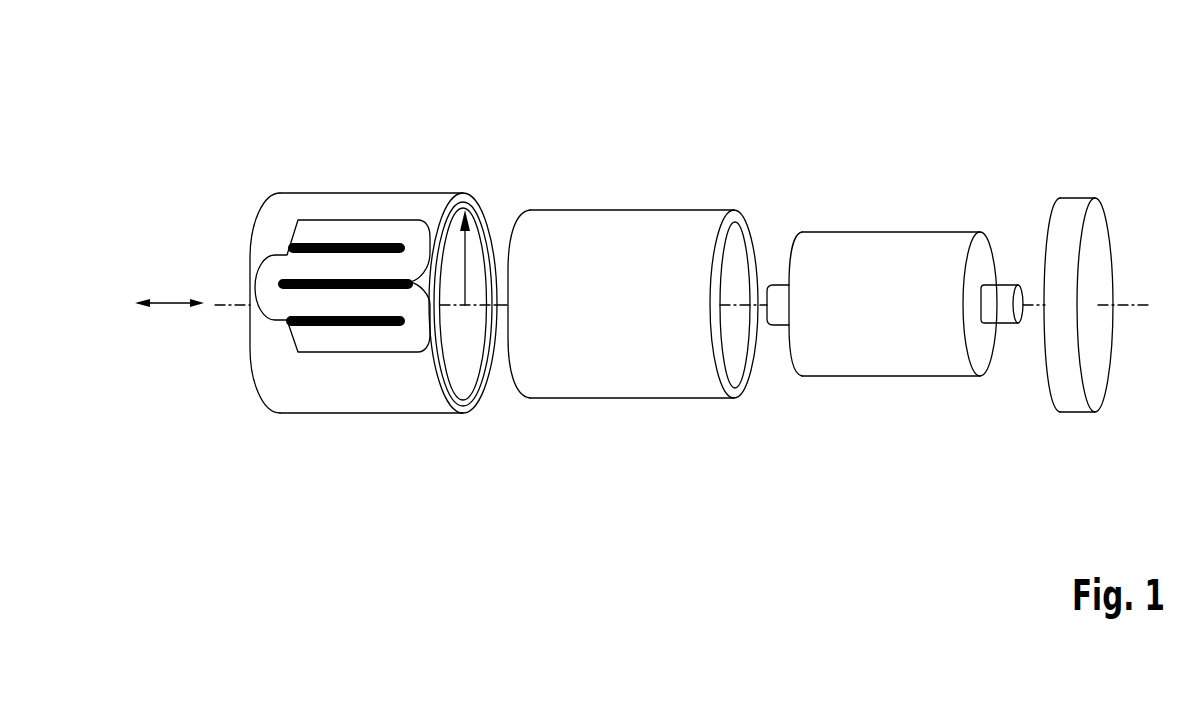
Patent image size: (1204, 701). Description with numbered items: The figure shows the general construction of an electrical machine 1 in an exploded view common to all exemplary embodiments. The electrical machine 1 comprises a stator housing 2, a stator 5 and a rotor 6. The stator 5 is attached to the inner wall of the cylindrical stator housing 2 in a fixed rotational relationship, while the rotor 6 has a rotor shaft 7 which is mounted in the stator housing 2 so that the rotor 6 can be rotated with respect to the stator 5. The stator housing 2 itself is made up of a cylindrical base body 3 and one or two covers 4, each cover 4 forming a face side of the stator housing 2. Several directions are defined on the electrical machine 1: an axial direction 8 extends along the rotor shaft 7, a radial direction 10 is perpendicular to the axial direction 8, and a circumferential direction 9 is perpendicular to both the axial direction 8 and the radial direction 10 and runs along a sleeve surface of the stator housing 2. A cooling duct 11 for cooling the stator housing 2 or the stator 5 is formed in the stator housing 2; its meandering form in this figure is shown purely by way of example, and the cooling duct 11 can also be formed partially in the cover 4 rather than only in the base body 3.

The electrical machine 1 is at (264, 129).
The stator housing 2 is at (357, 424).
The cylindrical base body 3 is at (410, 392).
The cover 4 is at (1072, 400).
The stator 5 is at (587, 377).
The rotor 6 is at (863, 370).
The rotor shaft 7 is at (1002, 302).
The axial direction 8 is at (183, 303).
The circumferential direction 9 is at (465, 193).
The radial direction 10 is at (468, 255).
The cooling duct 11 is at (362, 230).